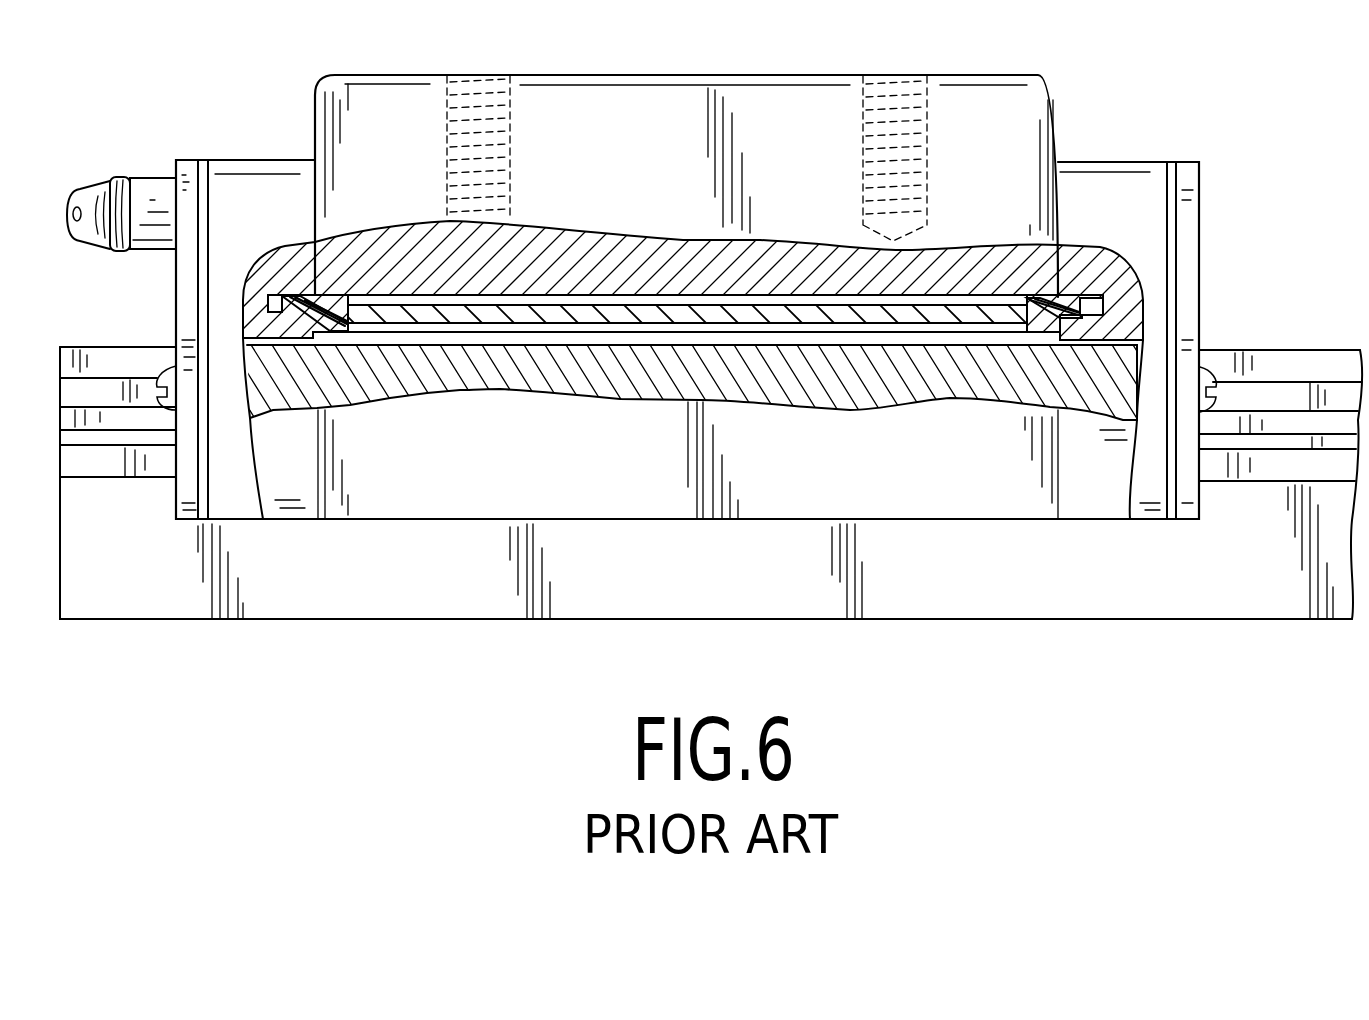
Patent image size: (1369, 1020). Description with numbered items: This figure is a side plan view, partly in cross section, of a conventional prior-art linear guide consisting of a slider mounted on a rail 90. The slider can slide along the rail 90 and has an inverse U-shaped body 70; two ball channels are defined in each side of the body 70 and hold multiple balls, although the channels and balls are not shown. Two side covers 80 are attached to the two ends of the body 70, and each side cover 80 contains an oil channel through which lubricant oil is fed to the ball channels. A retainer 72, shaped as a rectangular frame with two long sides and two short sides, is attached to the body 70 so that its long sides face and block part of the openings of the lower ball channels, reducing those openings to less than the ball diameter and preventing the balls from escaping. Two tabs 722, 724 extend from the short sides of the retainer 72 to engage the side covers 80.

The body 70 is at (697, 112).
The side cover 80 is at (260, 173).
The retainer 72 is at (660, 340).
The tab 722 is at (298, 298).
The tab 724 is at (1105, 303).
The rail 90 is at (210, 600).